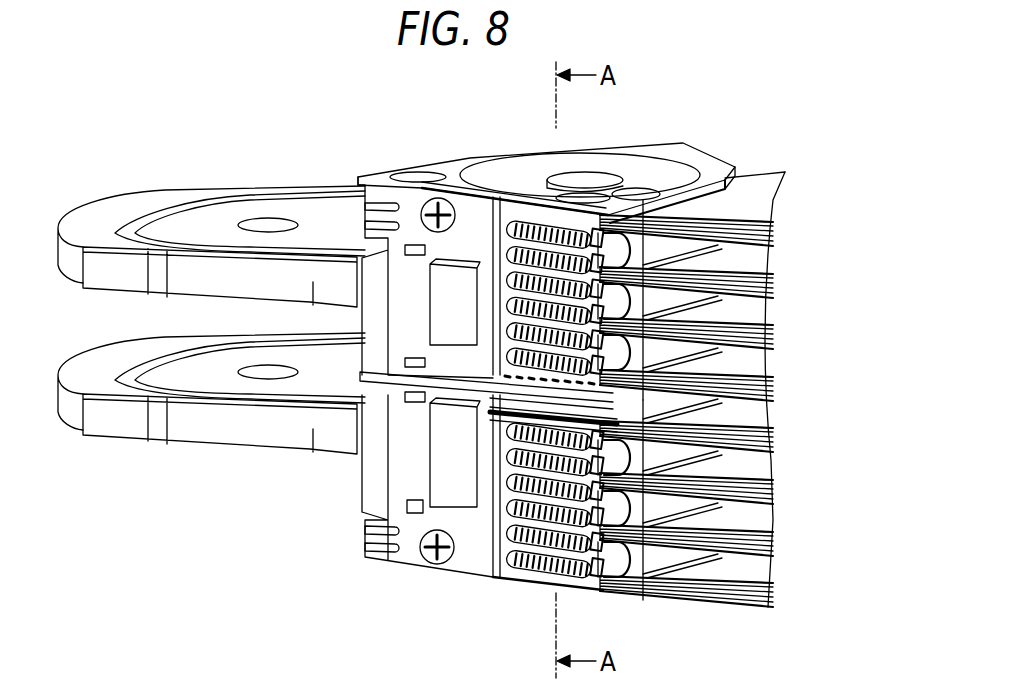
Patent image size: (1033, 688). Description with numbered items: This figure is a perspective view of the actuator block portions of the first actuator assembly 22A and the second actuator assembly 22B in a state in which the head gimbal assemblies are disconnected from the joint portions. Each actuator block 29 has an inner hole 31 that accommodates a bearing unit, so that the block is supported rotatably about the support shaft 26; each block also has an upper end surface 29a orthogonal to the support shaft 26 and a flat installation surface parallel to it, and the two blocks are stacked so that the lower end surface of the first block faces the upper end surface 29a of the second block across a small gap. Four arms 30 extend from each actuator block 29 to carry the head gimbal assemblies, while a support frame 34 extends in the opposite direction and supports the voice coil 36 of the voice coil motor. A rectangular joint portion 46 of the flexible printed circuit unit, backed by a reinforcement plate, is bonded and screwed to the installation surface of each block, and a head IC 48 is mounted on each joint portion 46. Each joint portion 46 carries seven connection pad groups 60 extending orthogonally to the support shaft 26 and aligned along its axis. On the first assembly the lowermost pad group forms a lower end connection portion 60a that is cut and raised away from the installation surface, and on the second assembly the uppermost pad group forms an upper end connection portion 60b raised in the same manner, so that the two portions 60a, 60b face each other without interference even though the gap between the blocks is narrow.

The first actuator assembly 22A is at (759, 186).
The second actuator assembly 22B is at (578, 595).
The support shaft 26 is at (583, 185).
The actuator block 29 is at (710, 168).
The upper end surface 29a is at (453, 168).
The arms 30 is at (719, 411).
The inner hole 31 is at (642, 170).
The support frame 34 is at (192, 287).
The voice coil 36 is at (227, 207).
The joint portion 46 is at (477, 215).
The head IC 48 is at (440, 298).
The connection pad groups 60 is at (508, 277).
The lower end connection portion 60a is at (497, 371).
The upper end connection portion 60b is at (492, 412).